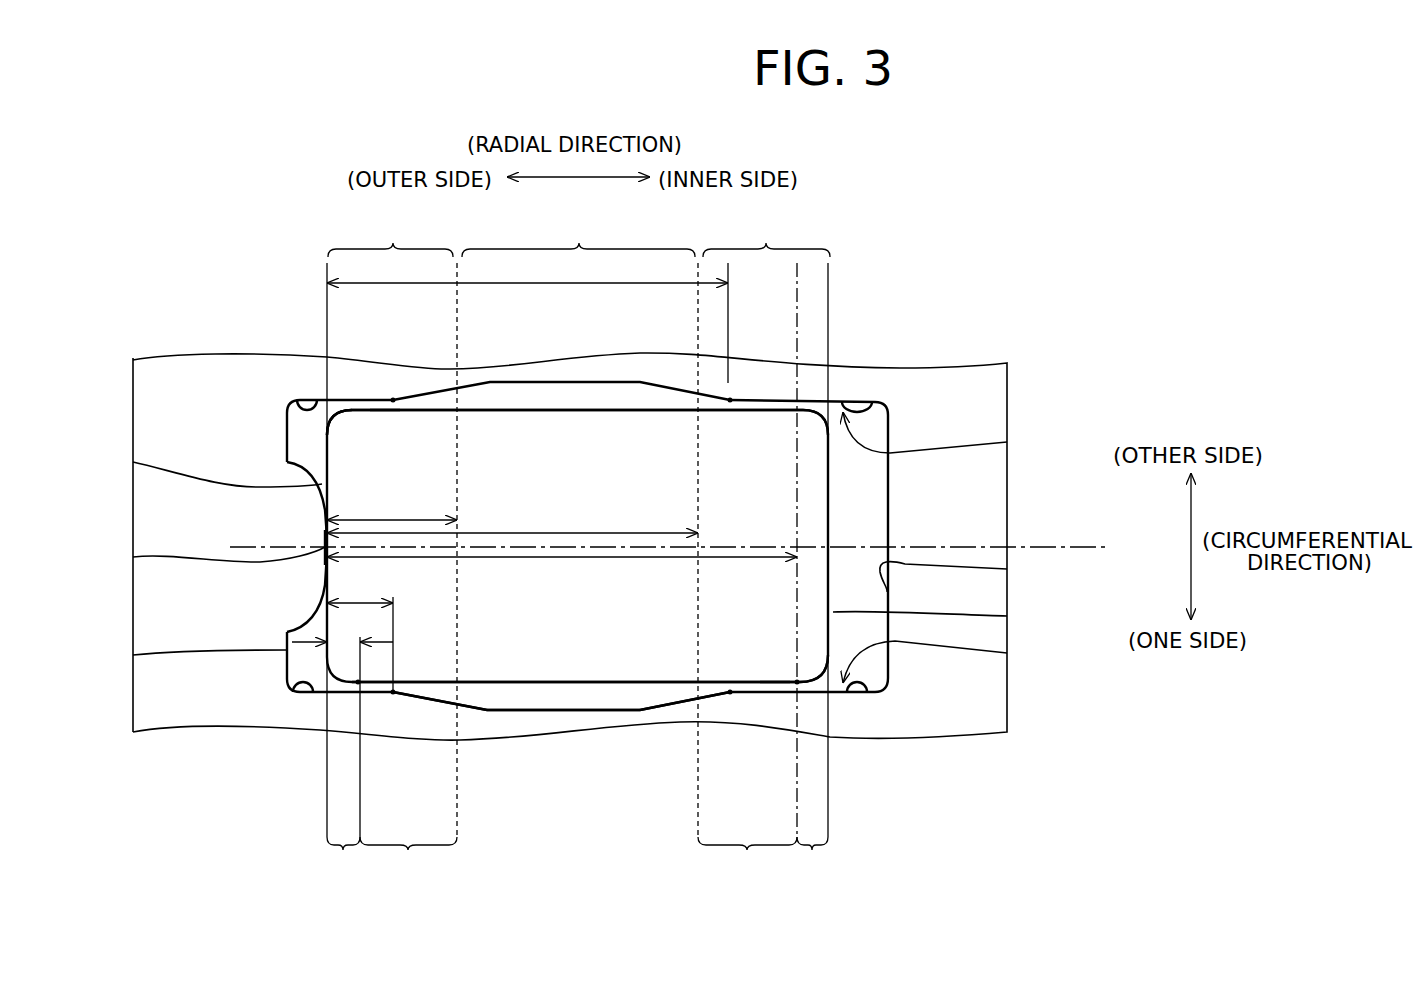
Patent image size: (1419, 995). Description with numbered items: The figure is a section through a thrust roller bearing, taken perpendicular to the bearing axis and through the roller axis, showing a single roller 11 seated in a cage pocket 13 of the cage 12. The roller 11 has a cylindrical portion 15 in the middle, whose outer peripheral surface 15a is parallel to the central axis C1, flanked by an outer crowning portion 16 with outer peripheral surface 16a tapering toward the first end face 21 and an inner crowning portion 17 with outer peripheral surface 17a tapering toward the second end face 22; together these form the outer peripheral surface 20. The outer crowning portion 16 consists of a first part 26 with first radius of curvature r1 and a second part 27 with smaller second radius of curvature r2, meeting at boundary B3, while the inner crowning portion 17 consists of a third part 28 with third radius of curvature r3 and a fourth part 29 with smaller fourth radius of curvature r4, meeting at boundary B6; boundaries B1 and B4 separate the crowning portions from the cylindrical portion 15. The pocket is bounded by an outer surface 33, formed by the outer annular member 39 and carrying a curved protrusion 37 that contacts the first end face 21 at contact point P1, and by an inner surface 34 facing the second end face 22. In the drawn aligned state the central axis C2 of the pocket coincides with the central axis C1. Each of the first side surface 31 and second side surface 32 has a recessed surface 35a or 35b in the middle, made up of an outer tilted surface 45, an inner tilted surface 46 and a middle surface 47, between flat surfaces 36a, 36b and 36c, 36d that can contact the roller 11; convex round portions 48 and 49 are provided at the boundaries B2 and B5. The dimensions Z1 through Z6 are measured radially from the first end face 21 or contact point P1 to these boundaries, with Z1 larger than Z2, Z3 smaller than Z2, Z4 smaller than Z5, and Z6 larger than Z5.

The roller 11 is at (630, 690).
The cage 12 is at (131, 612).
The cage pocket 13 is at (311, 442).
The cylindrical portion 15 is at (578, 231).
The outer peripheral surface of the cylindrical portion 15a is at (597, 410).
The outer crowning portion 16 is at (390, 521).
The outer peripheral surface of the outer crowning portion 16a is at (347, 410).
The inner crowning portion 17 is at (766, 521).
The outer peripheral surface of the inner crowning portion 17a is at (807, 402).
The outer peripheral surface of the roller 20 is at (580, 683).
The first end face 21 is at (133, 462).
The second end face 22 is at (1007, 616).
The first part 26 is at (408, 863).
The second part 27 is at (343, 863).
The third part 28 is at (747, 863).
The fourth part 29 is at (812, 863).
The first side surface 31 is at (1007, 653).
The second side surface 32 is at (1007, 442).
The outer surface 33 is at (133, 655).
The inner surface 34 is at (1007, 569).
The recessed surface 35a is at (523, 700).
The recessed surface 35b is at (548, 392).
The flat surface 36a is at (305, 692).
The flat surface 36b is at (863, 692).
The flat surface 36c is at (300, 400).
The flat surface 36d is at (863, 402).
The protrusion 37 is at (330, 572).
The outer annular member 39 is at (133, 512).
The outer tilted surface 45 is at (468, 707).
The inner tilted surface 46 is at (673, 700).
The middle surface 47 is at (548, 708).
The convex round portion 48 is at (394, 400).
The convex round portion 49 is at (731, 400).
The boundary B1 is at (460, 467).
The boundary B2 is at (394, 400).
The boundary B3 is at (358, 682).
The boundary B4 is at (698, 490).
The boundary B5 is at (731, 400).
The boundary B6 is at (797, 682).
The central axis of the roller C1 is at (669, 507).
The central axis of the cage pocket C2 is at (1073, 545).
The contact point P1 is at (133, 557).
The first radius of curvature r1 is at (385, 414).
The second radius of curvature r2 is at (339, 427).
The third radius of curvature r3 is at (772, 676).
The fourth radius of curvature r4 is at (818, 664).
The first dimension Z1 is at (392, 507).
The second dimension Z2 is at (360, 586).
The third dimension Z3 is at (342, 628).
The fourth dimension Z4 is at (512, 520).
The fifth dimension Z5 is at (527, 267).
The sixth dimension Z6 is at (562, 575).